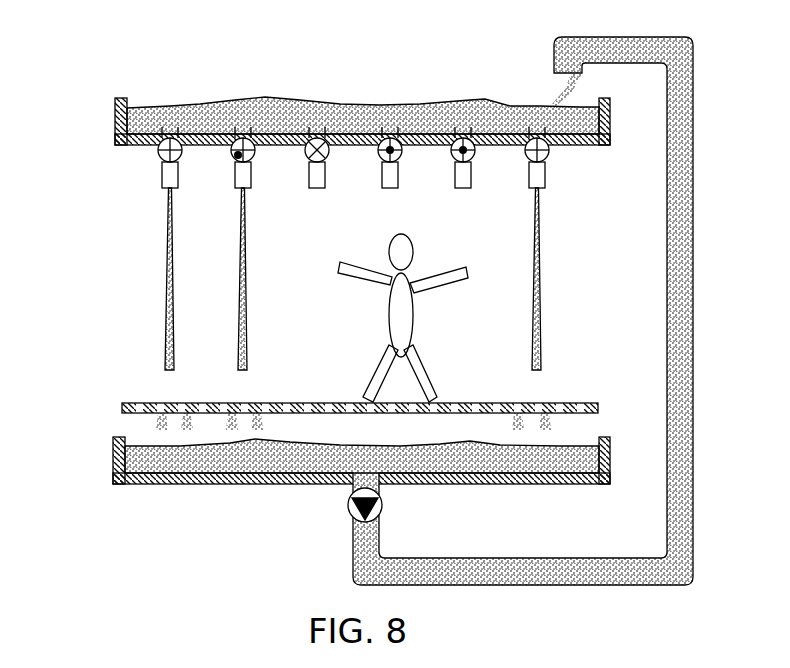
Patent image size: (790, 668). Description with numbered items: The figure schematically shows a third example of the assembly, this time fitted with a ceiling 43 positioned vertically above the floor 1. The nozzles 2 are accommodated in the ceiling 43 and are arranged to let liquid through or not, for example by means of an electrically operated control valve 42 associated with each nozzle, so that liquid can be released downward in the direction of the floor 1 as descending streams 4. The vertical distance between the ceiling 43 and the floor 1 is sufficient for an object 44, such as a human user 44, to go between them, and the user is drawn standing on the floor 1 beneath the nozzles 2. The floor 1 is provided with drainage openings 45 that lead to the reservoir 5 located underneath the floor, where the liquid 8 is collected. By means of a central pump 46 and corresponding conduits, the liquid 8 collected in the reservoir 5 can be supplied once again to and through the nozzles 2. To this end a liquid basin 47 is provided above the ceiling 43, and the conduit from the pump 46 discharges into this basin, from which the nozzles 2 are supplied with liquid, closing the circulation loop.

The floor 1 is at (127, 408).
The nozzle 2 is at (170, 188).
The water stream 4 is at (170, 303).
The reservoir 5 is at (105, 462).
The liquid 8 is at (172, 466).
The electrically operated control valve 42 is at (165, 157).
The ceiling 43 is at (146, 141).
The object 44 is at (401, 311).
The drainage opening 45 is at (140, 408).
The central pump 46 is at (352, 513).
The liquid basin 47 is at (272, 109).